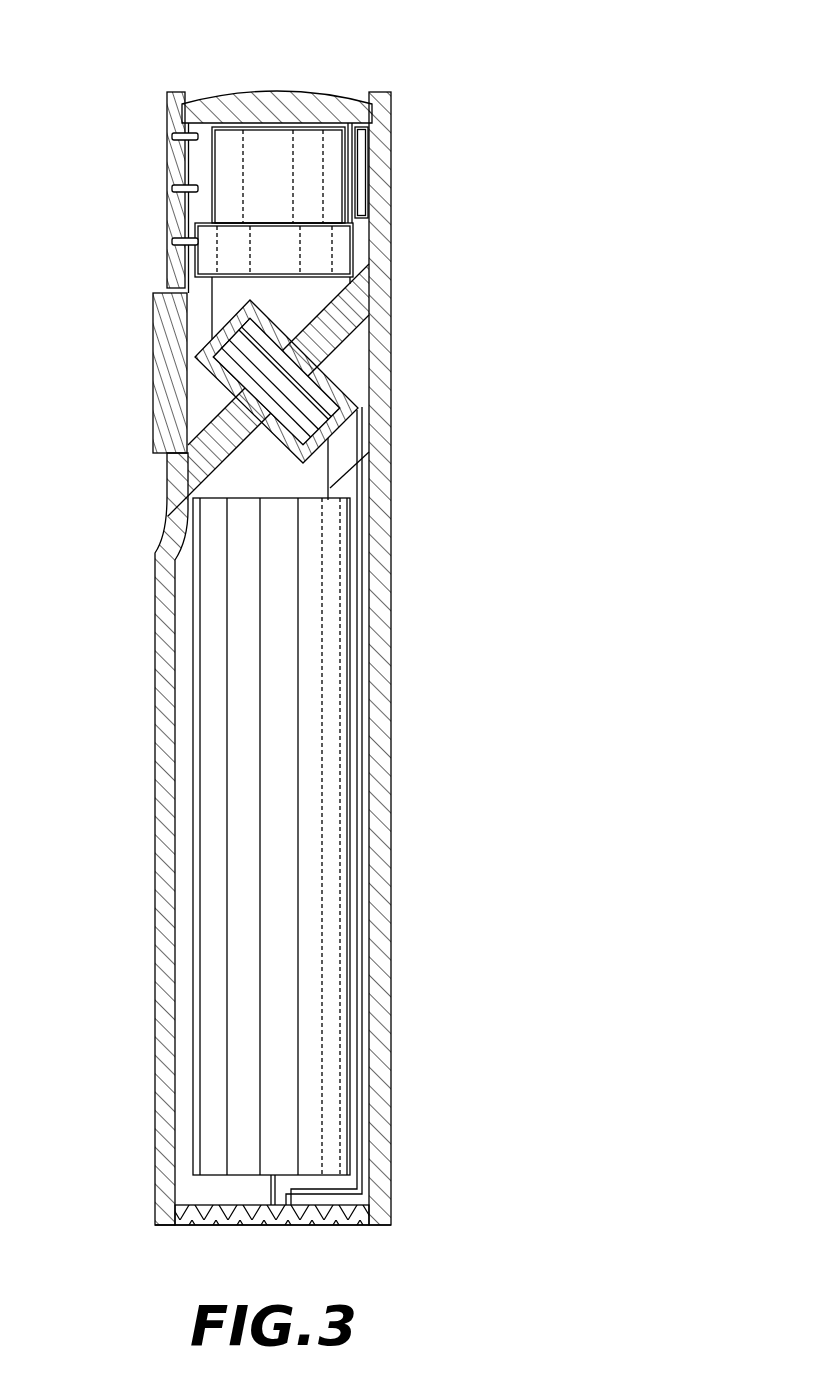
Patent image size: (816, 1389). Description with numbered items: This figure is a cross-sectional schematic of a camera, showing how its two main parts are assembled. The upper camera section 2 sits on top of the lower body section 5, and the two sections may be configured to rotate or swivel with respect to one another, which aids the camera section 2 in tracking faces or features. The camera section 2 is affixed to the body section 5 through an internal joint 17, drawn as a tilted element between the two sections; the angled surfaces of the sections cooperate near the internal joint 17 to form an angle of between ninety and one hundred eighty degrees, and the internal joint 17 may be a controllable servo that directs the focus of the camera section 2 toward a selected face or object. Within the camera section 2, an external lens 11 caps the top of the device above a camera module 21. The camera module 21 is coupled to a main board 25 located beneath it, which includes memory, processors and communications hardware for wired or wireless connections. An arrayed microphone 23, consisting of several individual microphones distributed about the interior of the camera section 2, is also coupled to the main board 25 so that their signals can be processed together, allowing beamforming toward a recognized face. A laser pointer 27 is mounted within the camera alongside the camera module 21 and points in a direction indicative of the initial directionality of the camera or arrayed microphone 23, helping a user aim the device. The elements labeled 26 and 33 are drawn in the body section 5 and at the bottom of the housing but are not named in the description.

The camera section 2 is at (396, 156).
The body section 5 is at (397, 548).
The external lens 11 is at (268, 90).
The internal joint 17 is at (307, 402).
The camera module 21 is at (345, 162).
The arrayed microphone 23 is at (172, 135).
The main board 25 is at (353, 252).
The air channel wall 26 is at (210, 318).
The laser pointer 27 is at (366, 195).
The bottom plate 33 is at (273, 1225).